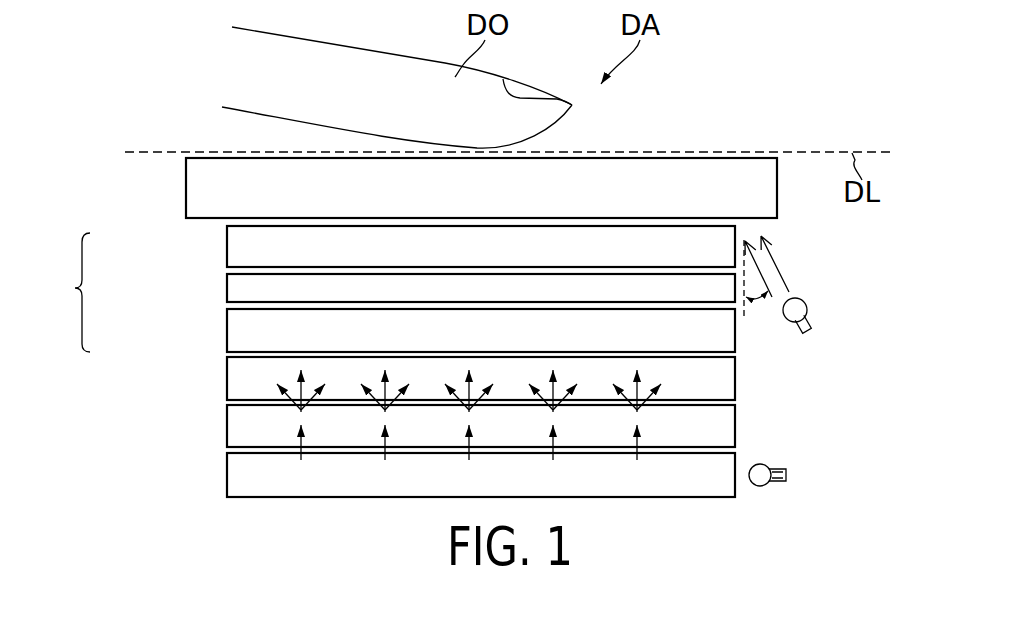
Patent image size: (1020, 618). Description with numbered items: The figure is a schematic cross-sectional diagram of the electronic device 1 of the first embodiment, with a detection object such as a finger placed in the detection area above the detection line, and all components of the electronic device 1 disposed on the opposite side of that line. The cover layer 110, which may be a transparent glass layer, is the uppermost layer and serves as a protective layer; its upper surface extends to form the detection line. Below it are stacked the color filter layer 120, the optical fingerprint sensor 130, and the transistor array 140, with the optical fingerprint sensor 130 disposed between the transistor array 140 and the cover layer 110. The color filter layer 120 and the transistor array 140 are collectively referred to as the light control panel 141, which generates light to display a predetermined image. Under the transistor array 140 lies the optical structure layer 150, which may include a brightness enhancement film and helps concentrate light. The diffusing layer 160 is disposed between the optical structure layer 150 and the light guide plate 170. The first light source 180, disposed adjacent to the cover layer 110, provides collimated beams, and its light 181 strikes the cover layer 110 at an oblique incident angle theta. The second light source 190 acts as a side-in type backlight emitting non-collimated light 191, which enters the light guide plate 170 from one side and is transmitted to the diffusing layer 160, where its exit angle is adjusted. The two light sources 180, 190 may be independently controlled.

The electronic device 1 is at (737, 130).
The cover layer 110 is at (186, 188).
The color filter layer 120 is at (227, 244).
The optical fingerprint sensor 130 is at (227, 283).
The transistor array 140 is at (227, 330).
The light control panel 141 is at (382, 289).
The optical structure layer 150 is at (227, 378).
The diffusing layer 160 is at (227, 425).
The light guide plate 170 is at (227, 473).
The first light source 180 is at (807, 306).
The light 181 is at (778, 263).
The second light source 190 is at (786, 475).
The light 191 is at (640, 409).